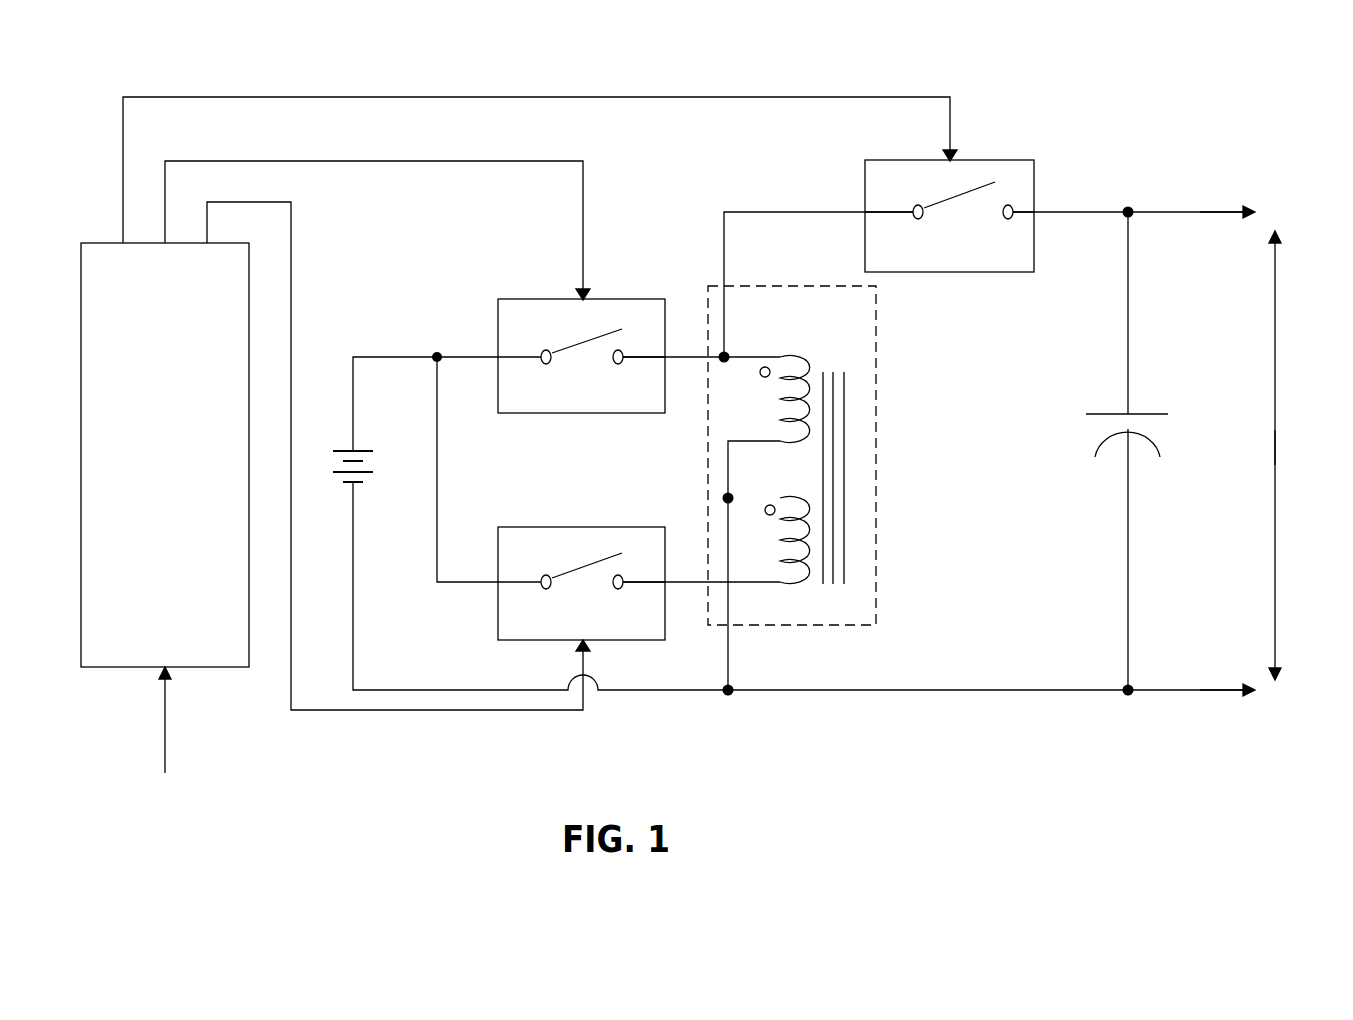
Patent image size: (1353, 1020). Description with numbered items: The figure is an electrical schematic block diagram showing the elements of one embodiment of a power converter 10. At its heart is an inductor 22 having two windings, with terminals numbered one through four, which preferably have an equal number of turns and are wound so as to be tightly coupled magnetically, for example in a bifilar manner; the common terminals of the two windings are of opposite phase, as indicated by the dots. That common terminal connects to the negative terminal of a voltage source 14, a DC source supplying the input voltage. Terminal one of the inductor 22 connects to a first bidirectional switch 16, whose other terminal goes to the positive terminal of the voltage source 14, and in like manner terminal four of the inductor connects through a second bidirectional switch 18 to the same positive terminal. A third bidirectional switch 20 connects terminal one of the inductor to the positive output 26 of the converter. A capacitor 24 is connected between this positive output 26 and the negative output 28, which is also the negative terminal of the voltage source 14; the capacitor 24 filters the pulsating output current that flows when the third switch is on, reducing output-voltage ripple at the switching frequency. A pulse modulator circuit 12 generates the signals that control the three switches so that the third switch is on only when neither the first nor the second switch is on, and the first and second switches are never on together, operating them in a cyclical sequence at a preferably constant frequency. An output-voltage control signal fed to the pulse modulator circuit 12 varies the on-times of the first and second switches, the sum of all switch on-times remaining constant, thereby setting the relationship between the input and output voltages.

The power converter 10 is at (1124, 82).
The pulse modulator circuit 12 is at (152, 531).
The voltage source 14 is at (374, 490).
The bidirectional switch 16 is at (570, 402).
The bidirectional switch 18 is at (570, 627).
The third bidirectional switch 20 is at (942, 257).
The inductor 22 is at (880, 598).
The capacitor 24 is at (1094, 438).
The positive output 26 is at (1252, 195).
The negative output 28 is at (1230, 708).